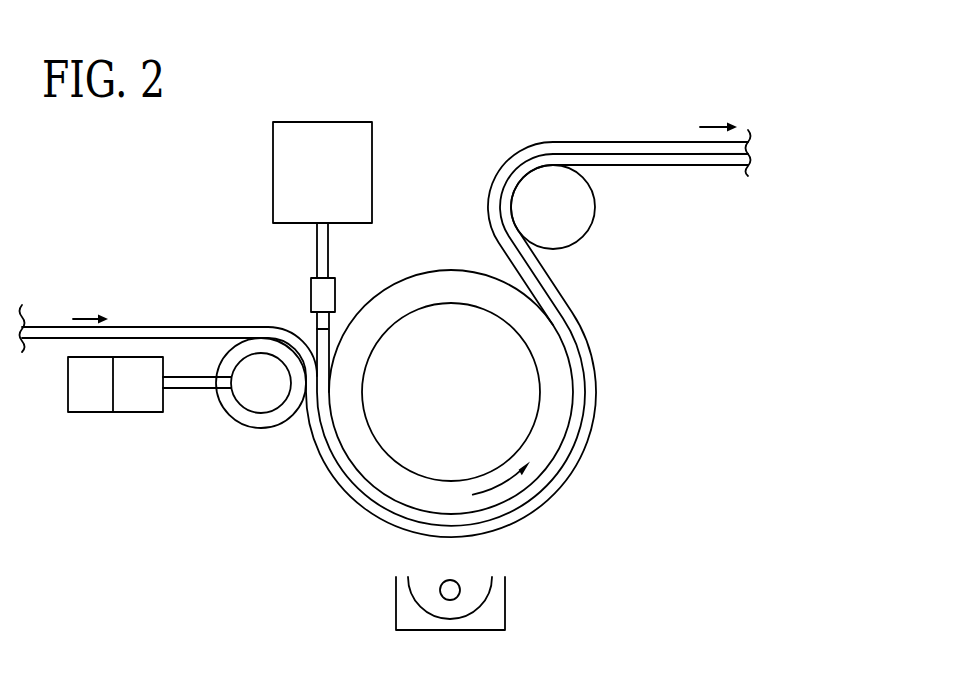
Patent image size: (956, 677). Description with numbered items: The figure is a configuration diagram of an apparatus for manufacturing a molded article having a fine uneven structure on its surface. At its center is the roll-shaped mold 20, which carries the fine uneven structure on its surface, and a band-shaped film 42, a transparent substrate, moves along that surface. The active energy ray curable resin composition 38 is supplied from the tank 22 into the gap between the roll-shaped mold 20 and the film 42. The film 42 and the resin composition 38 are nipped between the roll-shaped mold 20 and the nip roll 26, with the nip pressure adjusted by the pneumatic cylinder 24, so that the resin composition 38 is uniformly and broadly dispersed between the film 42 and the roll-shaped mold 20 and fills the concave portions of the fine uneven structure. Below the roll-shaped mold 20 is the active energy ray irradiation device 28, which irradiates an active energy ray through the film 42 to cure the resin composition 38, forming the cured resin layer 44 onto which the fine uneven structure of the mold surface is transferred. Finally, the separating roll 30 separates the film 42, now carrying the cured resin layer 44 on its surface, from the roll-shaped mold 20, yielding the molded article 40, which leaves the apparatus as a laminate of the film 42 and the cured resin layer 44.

The roll-shaped mold 20 is at (442, 270).
The tank 22 is at (273, 168).
The pneumatic cylinder 24 is at (132, 413).
The nip roll 26 is at (259, 429).
The active energy ray irradiation device 28 is at (505, 595).
The separating roll 30 is at (596, 210).
The active energy ray curable resin composition 38 is at (322, 338).
The molded article 40 is at (670, 73).
The band-shaped film 42 is at (172, 325).
The cured resin layer 44 is at (603, 150).